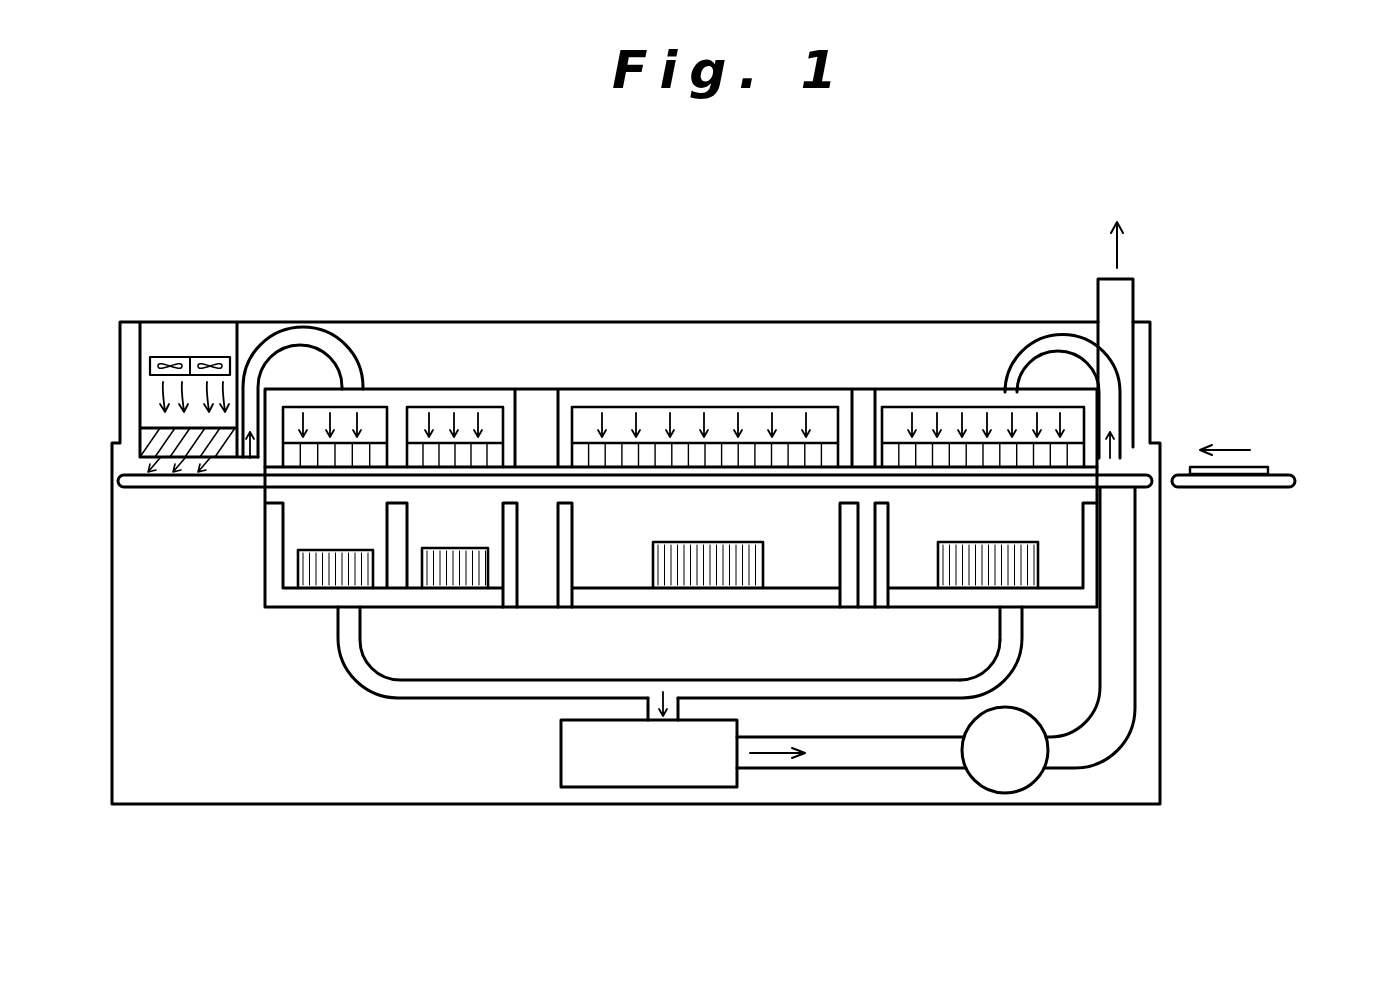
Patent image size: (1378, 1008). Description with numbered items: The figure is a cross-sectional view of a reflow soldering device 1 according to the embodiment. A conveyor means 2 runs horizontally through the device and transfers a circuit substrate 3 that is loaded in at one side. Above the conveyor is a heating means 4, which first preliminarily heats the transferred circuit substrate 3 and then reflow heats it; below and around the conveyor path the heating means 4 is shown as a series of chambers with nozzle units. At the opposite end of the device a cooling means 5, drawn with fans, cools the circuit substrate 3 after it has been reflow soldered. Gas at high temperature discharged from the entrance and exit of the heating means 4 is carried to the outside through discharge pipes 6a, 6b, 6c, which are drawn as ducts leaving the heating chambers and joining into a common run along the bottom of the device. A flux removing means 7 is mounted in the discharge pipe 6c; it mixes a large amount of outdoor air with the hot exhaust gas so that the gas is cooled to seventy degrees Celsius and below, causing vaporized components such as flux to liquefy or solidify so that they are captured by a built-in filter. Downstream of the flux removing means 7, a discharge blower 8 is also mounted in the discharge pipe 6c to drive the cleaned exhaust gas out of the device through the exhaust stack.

The reflow soldering device 1 is at (927, 316).
The conveyor means 2 is at (1135, 470).
The circuit substrate 3 is at (1268, 468).
The heating means 4 is at (633, 386).
The cooling means 5 is at (129, 353).
The discharge pipe 6a is at (1022, 645).
The discharge pipe 6b is at (357, 681).
The discharge pipe 6c is at (858, 768).
The flux removing means 7 is at (555, 772).
The discharge blower 8 is at (1040, 778).